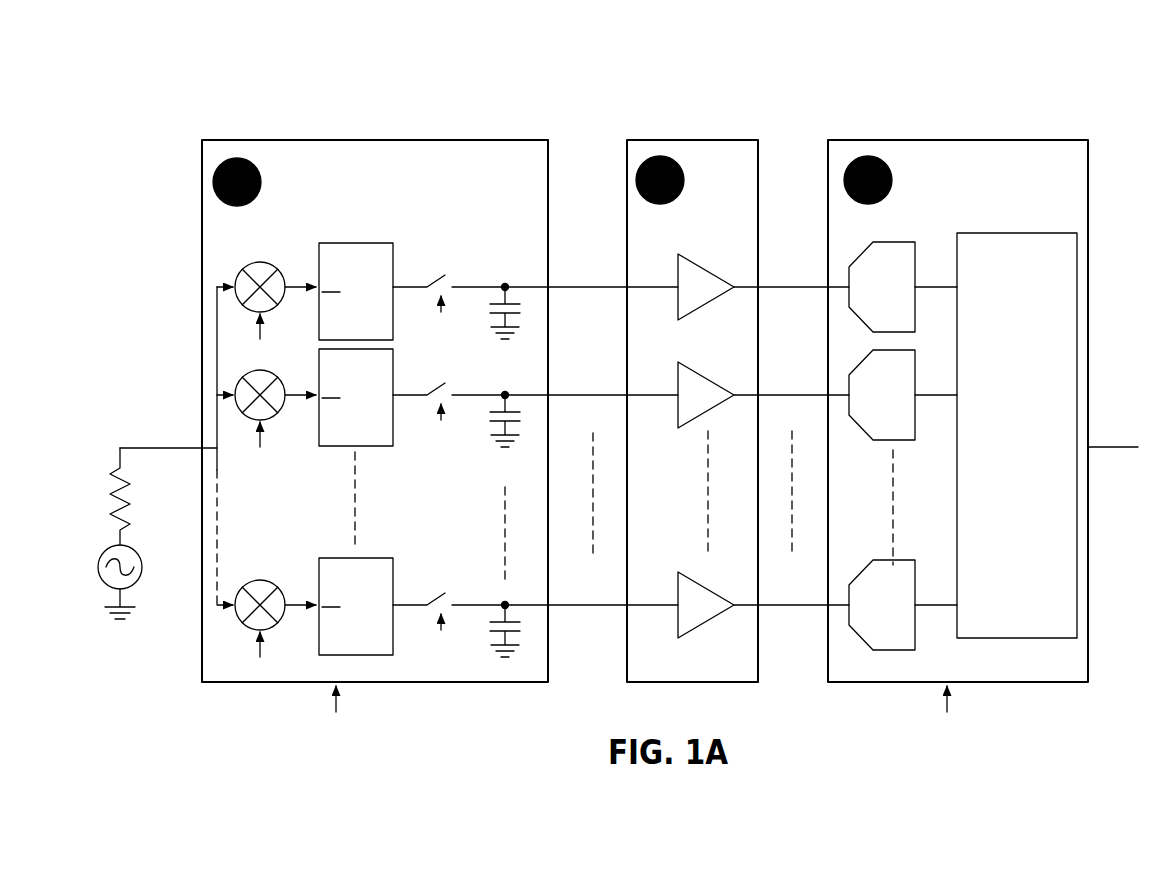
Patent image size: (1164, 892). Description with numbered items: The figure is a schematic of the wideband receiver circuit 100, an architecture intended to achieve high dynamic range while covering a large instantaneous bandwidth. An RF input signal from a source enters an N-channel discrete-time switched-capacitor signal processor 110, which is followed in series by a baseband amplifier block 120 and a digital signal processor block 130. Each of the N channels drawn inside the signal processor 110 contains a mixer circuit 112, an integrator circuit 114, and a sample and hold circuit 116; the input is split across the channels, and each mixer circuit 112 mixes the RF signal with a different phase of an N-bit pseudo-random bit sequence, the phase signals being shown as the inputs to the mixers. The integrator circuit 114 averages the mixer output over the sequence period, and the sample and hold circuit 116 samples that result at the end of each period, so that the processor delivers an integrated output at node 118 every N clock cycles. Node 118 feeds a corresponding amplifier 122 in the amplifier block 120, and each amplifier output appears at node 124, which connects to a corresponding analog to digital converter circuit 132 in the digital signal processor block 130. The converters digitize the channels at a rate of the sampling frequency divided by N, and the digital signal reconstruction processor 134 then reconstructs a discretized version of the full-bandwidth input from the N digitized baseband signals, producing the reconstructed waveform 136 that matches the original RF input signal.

The wideband receiver circuit 100 is at (160, 91).
The discrete-time switched-capacitor signal processor 110 is at (290, 140).
The mixer circuit 112 is at (240, 272).
The integrator circuit 114 is at (319, 253).
The sample and hold circuit 116 is at (480, 270).
The node 118 is at (590, 287).
The baseband amplifier block 120 is at (675, 140).
The amplifier 122 is at (706, 266).
The node 124 is at (816, 287).
The digital signal processor block 130 is at (990, 140).
The analog to digital converter circuit 132 is at (900, 242).
The digital signal reconstruction processor 134 is at (1003, 233).
The reconstructed waveform x[n] 136 is at (1108, 448).